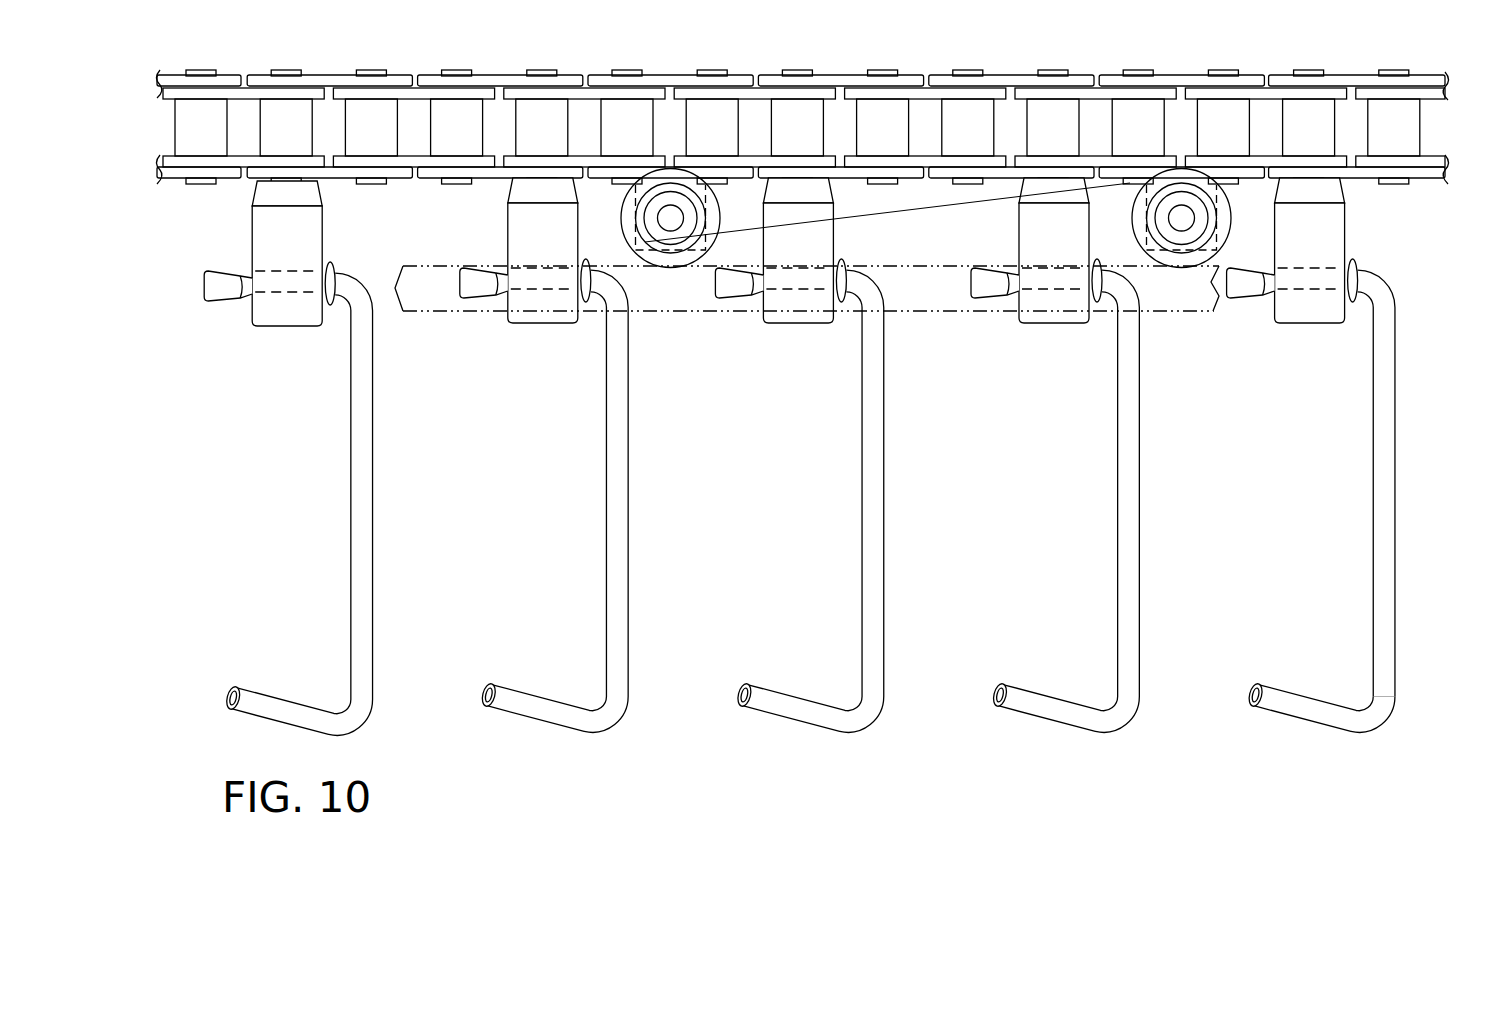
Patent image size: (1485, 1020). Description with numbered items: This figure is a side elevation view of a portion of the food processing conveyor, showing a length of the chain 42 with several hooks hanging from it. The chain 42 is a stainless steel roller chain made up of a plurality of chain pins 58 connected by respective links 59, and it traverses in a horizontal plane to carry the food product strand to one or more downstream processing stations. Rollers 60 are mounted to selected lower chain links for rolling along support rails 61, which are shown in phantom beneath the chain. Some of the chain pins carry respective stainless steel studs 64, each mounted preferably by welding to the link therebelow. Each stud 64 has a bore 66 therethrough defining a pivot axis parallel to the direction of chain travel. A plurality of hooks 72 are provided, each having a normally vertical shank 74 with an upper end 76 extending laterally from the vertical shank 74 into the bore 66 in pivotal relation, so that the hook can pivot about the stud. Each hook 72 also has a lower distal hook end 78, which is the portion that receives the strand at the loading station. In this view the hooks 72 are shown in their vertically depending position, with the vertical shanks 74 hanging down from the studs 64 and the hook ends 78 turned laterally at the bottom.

The chain 42 is at (813, 121).
The chain pins 58 is at (1045, 113).
The links 59 is at (1422, 177).
The rollers 60 is at (1184, 258).
The support rails 61 is at (944, 314).
The studs 64 is at (1314, 312).
The bore 66 is at (1303, 273).
The hooks 72 is at (1392, 703).
The vertical shank 74 is at (1385, 470).
The upper end 76 is at (1248, 290).
The lower distal hook end 78 is at (1276, 695).